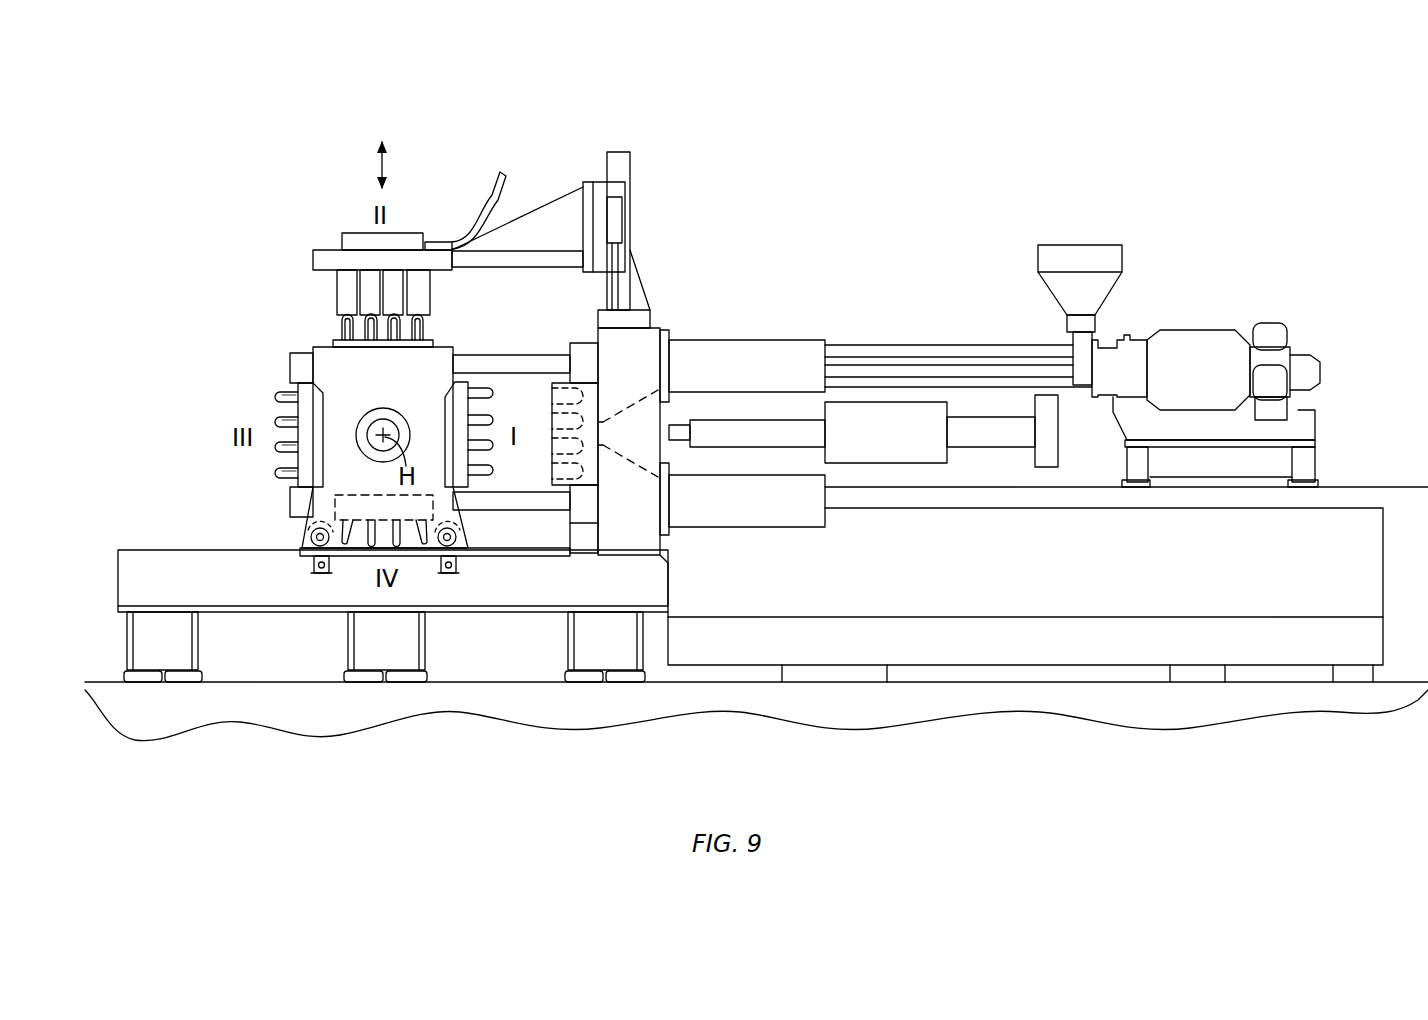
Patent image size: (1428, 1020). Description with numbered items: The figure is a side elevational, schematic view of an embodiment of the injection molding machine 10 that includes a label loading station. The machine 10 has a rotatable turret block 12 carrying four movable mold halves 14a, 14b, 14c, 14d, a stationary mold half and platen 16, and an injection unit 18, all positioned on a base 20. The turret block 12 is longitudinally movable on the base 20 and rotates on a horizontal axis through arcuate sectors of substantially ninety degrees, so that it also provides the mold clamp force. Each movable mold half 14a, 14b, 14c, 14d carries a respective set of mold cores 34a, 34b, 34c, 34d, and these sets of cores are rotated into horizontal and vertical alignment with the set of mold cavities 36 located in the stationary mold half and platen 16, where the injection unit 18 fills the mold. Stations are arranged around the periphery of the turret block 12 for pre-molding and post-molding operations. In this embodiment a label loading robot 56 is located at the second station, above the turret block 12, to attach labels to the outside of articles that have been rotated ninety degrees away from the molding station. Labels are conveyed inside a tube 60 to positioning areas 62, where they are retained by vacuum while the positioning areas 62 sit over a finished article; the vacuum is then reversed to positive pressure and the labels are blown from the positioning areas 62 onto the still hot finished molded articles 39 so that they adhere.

The injection molding machine 10 is at (775, 121).
The turret block 12 is at (215, 490).
The movable mold half 14a is at (460, 393).
The movable mold half 14b is at (343, 347).
The movable mold half 14c is at (313, 473).
The movable mold half 14d is at (427, 507).
The stationary mold half and platen 16 is at (643, 340).
The injection unit 18 is at (878, 418).
The base 20 is at (656, 751).
The set of mold cores 34a is at (487, 425).
The set of mold cores 34b is at (340, 328).
The set of mold cores 34c is at (275, 398).
The set of mold cores 34d is at (368, 537).
The set of mold cavities 36 is at (584, 473).
The molded articles 39 is at (431, 330).
The label loading robot 56 is at (344, 201).
The tube 60 is at (477, 187).
The positioning areas 62 is at (343, 286).